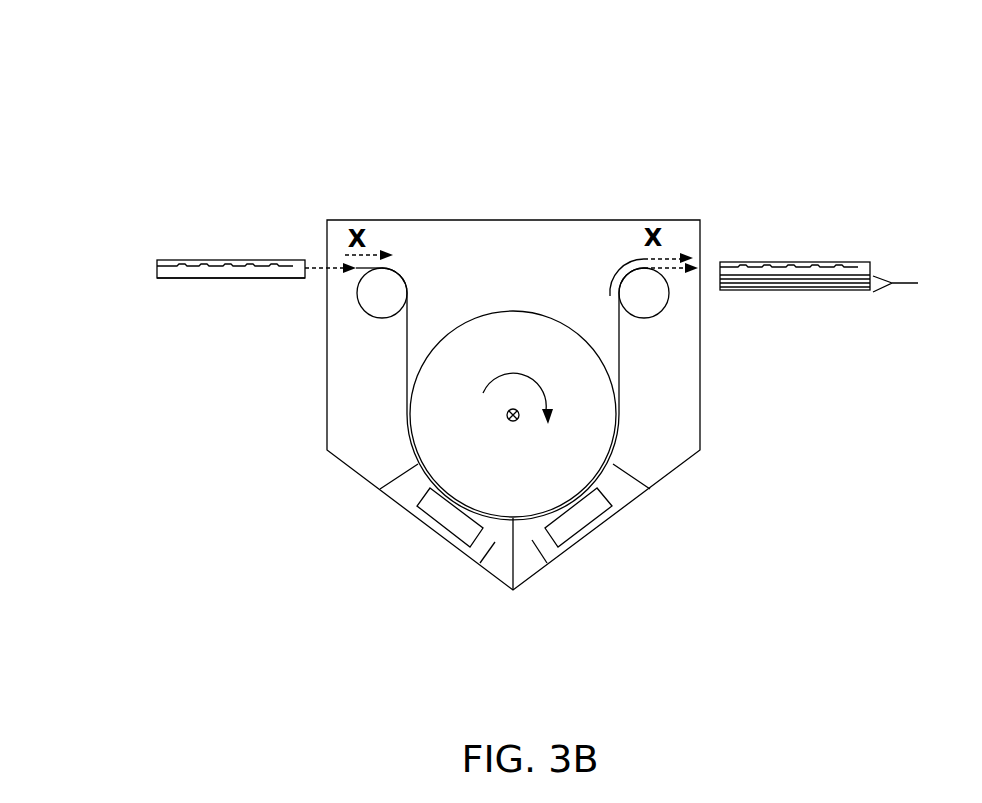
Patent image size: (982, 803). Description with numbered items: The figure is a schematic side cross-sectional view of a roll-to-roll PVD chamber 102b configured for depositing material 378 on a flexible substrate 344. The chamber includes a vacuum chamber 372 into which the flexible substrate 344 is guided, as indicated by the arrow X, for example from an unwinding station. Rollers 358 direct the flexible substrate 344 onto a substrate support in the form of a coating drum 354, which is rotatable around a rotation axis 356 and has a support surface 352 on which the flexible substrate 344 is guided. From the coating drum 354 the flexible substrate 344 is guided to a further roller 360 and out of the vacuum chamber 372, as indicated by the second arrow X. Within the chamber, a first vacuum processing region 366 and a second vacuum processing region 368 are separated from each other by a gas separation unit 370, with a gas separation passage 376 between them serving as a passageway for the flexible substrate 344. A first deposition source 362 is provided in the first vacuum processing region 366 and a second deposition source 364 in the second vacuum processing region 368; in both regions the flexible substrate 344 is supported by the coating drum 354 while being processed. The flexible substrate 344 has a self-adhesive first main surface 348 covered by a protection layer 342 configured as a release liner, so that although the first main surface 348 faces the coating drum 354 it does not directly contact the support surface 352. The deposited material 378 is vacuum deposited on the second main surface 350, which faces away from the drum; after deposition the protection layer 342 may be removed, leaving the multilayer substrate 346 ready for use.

The roll-to-roll PVD chamber 102b is at (574, 165).
The protection layer 342 is at (194, 261).
The flexible substrate 344 is at (222, 272).
The multilayer substrate 346 is at (798, 238).
The first main surface 348 is at (272, 265).
The second main surface 350 is at (290, 279).
The support surface 352 is at (440, 338).
The coating drum 354 is at (517, 330).
The rotation axis 356 is at (505, 414).
The rollers 358 is at (382, 318).
The further roller 360 is at (646, 318).
The first deposition source 362 is at (443, 513).
The second deposition source 364 is at (585, 513).
The first vacuum processing region 366 is at (490, 545).
The second vacuum processing region 368 is at (533, 544).
The gas separation unit 370 is at (500, 568).
The vacuum chamber 372 is at (667, 475).
The gas separation passage 376 is at (513, 519).
The deposited material 378 is at (921, 281).